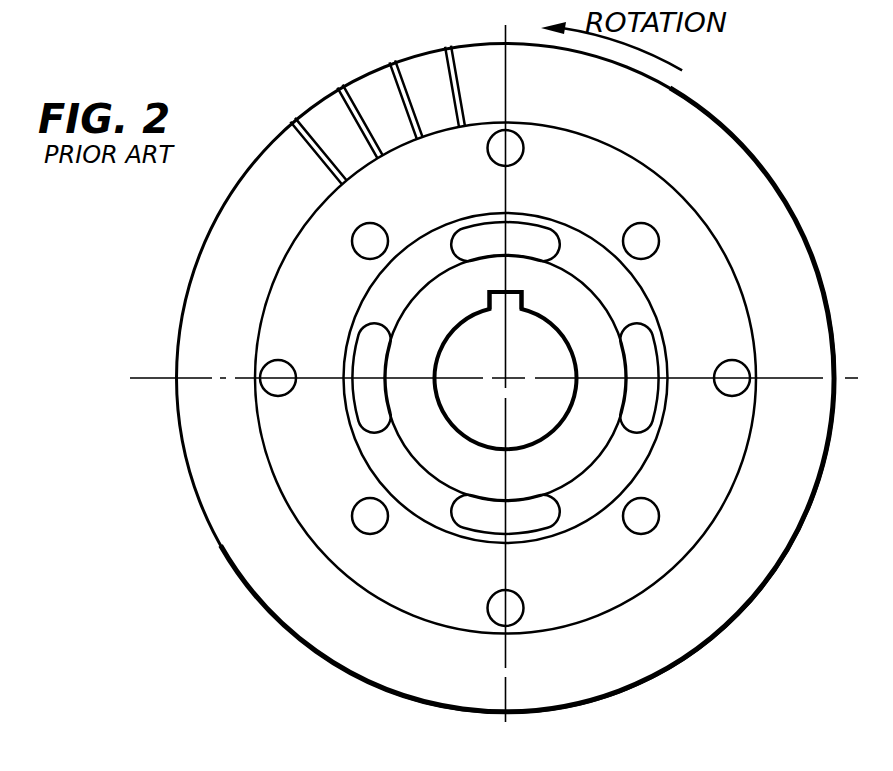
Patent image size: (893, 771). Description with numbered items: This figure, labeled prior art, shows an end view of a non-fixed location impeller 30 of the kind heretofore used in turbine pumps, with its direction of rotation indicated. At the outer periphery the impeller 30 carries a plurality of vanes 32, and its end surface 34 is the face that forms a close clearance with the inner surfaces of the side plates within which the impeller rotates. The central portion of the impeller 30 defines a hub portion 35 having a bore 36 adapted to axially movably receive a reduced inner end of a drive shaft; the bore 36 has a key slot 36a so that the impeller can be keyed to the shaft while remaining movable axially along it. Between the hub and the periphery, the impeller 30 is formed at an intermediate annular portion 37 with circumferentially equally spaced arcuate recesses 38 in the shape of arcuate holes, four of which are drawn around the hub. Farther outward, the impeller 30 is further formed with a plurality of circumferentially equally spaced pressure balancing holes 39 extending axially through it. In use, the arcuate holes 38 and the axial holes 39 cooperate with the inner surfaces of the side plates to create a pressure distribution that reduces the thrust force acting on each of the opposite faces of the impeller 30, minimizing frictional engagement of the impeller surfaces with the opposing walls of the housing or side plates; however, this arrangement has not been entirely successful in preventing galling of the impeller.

The impeller 30 is at (248, 588).
The vanes 32 is at (423, 55).
The end surface 34 is at (715, 287).
The hub portion 35 is at (588, 307).
The bore 36 is at (557, 403).
The key slot 36a is at (493, 300).
The intermediate annular portion 37 is at (583, 255).
The arcuate recesses 38 is at (480, 238).
The pressure balancing holes 39 is at (523, 146).